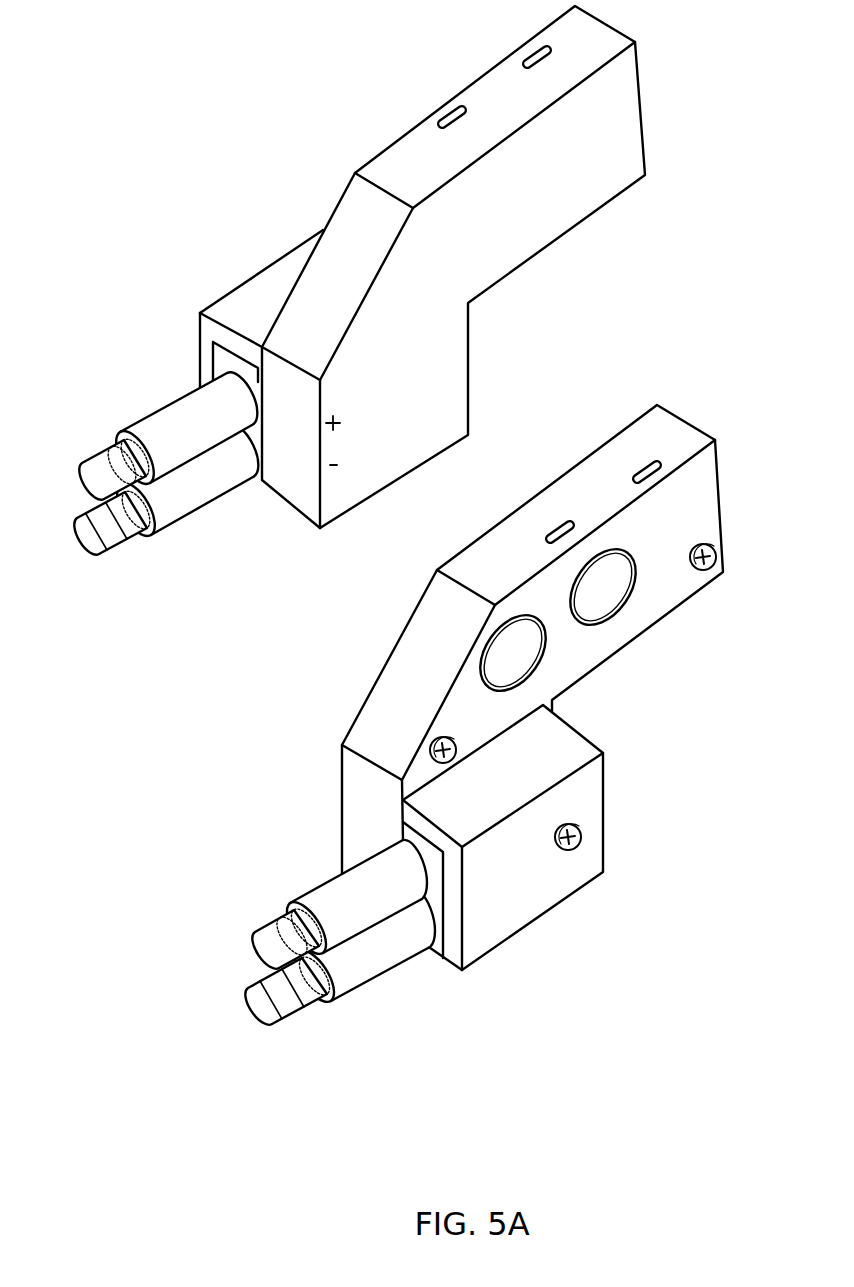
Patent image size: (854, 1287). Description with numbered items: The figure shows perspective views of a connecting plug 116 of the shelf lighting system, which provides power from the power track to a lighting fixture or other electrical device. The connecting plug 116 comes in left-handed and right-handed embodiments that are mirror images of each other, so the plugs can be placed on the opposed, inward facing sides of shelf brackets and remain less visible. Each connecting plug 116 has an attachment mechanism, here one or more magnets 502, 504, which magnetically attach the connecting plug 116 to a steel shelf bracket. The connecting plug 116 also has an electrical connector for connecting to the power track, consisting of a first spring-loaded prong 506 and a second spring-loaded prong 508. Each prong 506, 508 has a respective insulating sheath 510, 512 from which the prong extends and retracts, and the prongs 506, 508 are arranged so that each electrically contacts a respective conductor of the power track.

The connecting plug 116 is at (366, 200).
The magnet 502 is at (624, 586).
The magnet 504 is at (537, 645).
The first spring-loaded prong 506 is at (273, 1005).
The second spring-loaded prong 508 is at (268, 927).
The insulating sheath 510 is at (357, 967).
The insulating sheath 512 is at (325, 885).